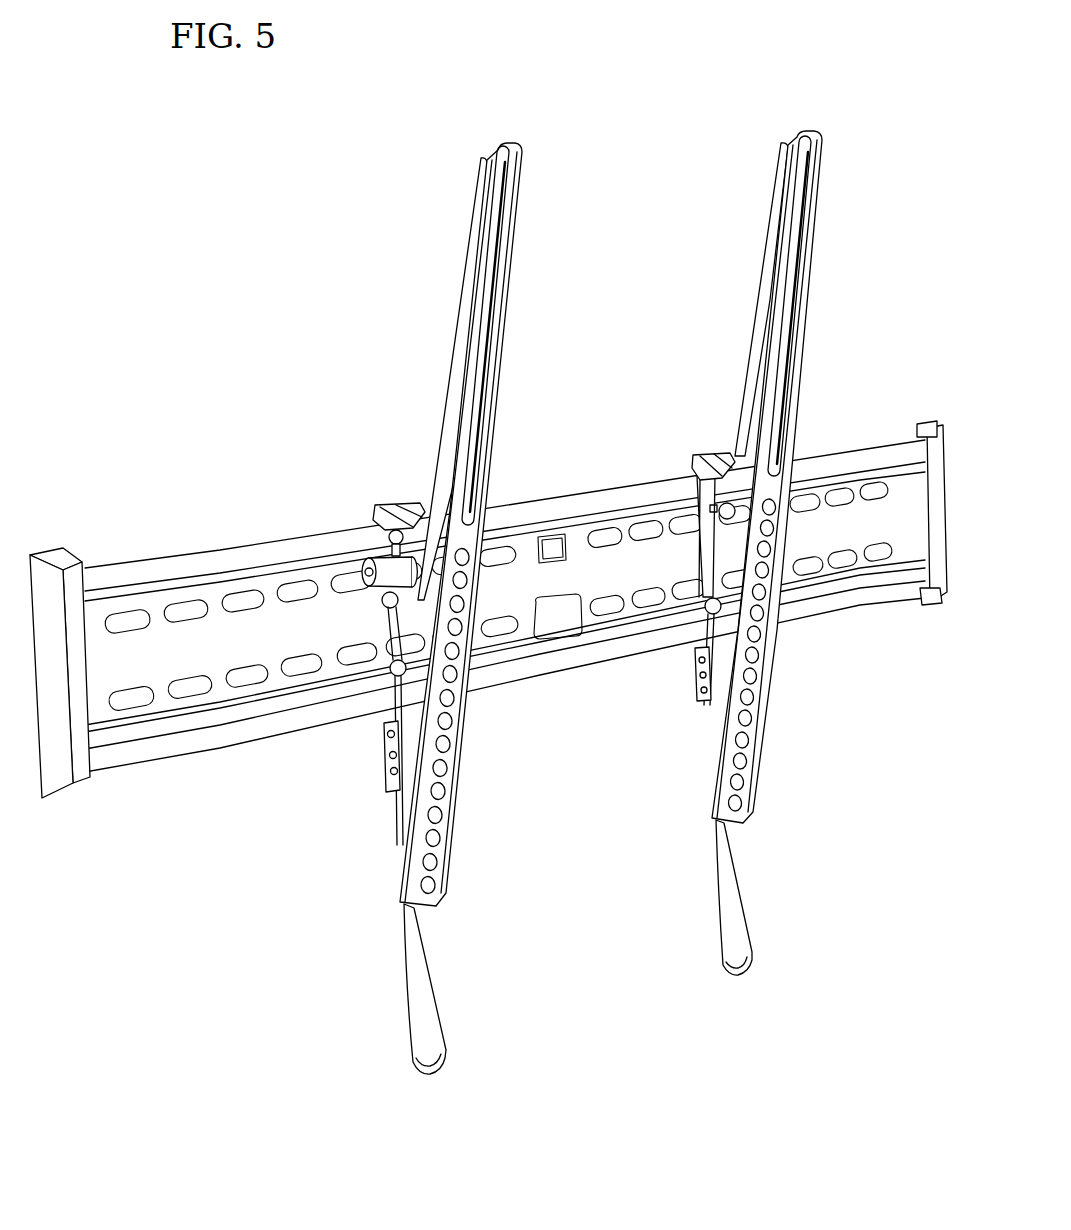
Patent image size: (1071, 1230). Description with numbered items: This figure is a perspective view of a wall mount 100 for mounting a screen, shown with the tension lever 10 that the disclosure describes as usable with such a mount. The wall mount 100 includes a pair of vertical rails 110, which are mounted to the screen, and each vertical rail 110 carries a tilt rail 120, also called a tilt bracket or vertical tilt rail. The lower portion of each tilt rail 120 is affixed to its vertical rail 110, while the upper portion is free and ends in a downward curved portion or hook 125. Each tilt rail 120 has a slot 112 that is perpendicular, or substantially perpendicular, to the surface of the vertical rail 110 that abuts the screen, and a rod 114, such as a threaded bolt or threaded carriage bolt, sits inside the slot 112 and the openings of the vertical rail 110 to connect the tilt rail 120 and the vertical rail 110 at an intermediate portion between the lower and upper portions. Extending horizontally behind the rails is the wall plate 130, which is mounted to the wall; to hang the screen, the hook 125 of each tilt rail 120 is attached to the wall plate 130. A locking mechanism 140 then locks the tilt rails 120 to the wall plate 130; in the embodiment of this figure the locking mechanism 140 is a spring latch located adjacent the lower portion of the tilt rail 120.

The wall mount 100 is at (868, 763).
The vertical rail 110 is at (506, 320).
The slot 112 is at (722, 506).
The rod 114 is at (732, 457).
The tilt rail 120 is at (388, 505).
The downward curved portion 125 is at (390, 536).
The wall plate 130 is at (850, 443).
The locking mechanism 140 is at (370, 752).
The tension lever 10 is at (368, 566).